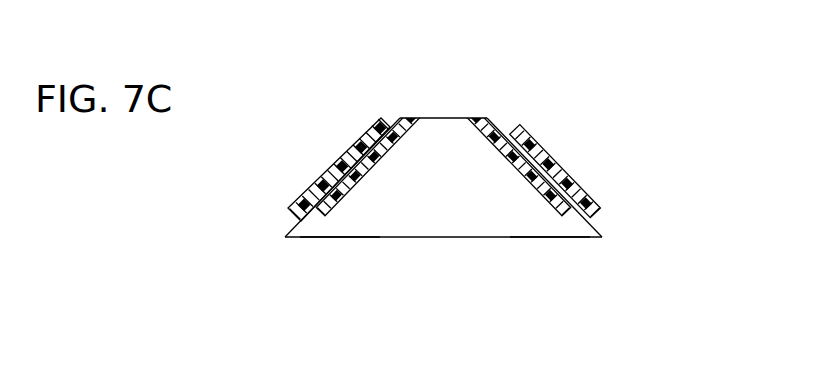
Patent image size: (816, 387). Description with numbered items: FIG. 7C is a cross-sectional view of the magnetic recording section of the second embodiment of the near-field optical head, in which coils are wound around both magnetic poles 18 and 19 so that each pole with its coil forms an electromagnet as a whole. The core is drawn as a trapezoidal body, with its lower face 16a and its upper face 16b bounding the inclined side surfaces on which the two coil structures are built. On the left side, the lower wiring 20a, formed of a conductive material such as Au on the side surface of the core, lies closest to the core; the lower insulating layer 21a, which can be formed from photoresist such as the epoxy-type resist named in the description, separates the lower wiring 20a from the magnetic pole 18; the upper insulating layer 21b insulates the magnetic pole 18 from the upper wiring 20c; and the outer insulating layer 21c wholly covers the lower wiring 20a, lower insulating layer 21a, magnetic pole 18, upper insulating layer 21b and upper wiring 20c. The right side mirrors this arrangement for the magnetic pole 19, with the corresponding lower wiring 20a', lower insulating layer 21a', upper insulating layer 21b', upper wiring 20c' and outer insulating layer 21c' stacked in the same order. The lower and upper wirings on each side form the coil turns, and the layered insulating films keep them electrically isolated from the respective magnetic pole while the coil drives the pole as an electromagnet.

The bottom surface 16a is at (440, 239).
The top surface 16b is at (443, 118).
The magnetic pole 18 is at (401, 118).
The magnetic pole 19 is at (488, 125).
The lower wiring 20a is at (368, 208).
The inner row of elements 20a' is at (519, 199).
The upper wiring 20c is at (322, 165).
The outer row of elements 20c' is at (578, 164).
The lower insulating layer 21a is at (340, 291).
The lower layer 21a' is at (550, 281).
The upper insulating layer 21b is at (342, 202).
The inner strip 21b' is at (544, 205).
The outer insulating layer 21c is at (294, 174).
The outer strip 21c' is at (604, 176).